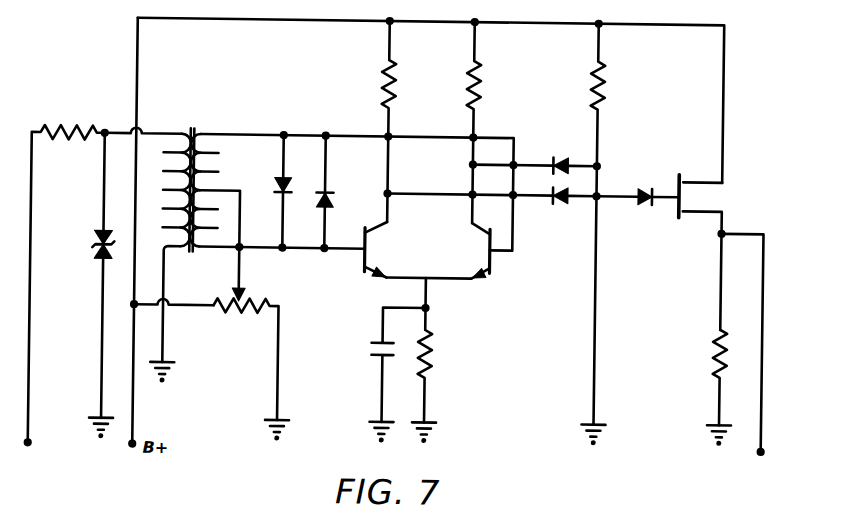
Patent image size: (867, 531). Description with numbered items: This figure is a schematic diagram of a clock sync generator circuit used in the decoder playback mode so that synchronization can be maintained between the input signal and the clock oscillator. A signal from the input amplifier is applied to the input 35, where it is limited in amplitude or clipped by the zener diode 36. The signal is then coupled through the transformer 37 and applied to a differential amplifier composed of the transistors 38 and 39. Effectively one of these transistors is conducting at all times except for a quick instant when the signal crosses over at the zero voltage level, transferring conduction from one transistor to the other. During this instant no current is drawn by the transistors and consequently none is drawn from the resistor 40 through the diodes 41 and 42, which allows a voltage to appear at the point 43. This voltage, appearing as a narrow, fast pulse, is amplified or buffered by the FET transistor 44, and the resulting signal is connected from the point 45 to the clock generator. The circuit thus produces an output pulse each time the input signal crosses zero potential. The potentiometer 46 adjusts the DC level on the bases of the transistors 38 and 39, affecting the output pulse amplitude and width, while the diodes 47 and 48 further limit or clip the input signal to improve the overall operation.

The input 35 is at (27, 340).
The zener diode 36 is at (111, 221).
The transformer 37 is at (200, 113).
The transistor 38 is at (363, 255).
The transistor 39 is at (495, 257).
The resistor 40 is at (604, 71).
The diode 41 is at (555, 160).
The diode 42 is at (557, 202).
The point 43 is at (598, 193).
The FET transistor 44 is at (689, 198).
The point 45 is at (764, 372).
The potentiometer 46 is at (248, 306).
The diode 47 is at (291, 166).
The diode 48 is at (333, 175).